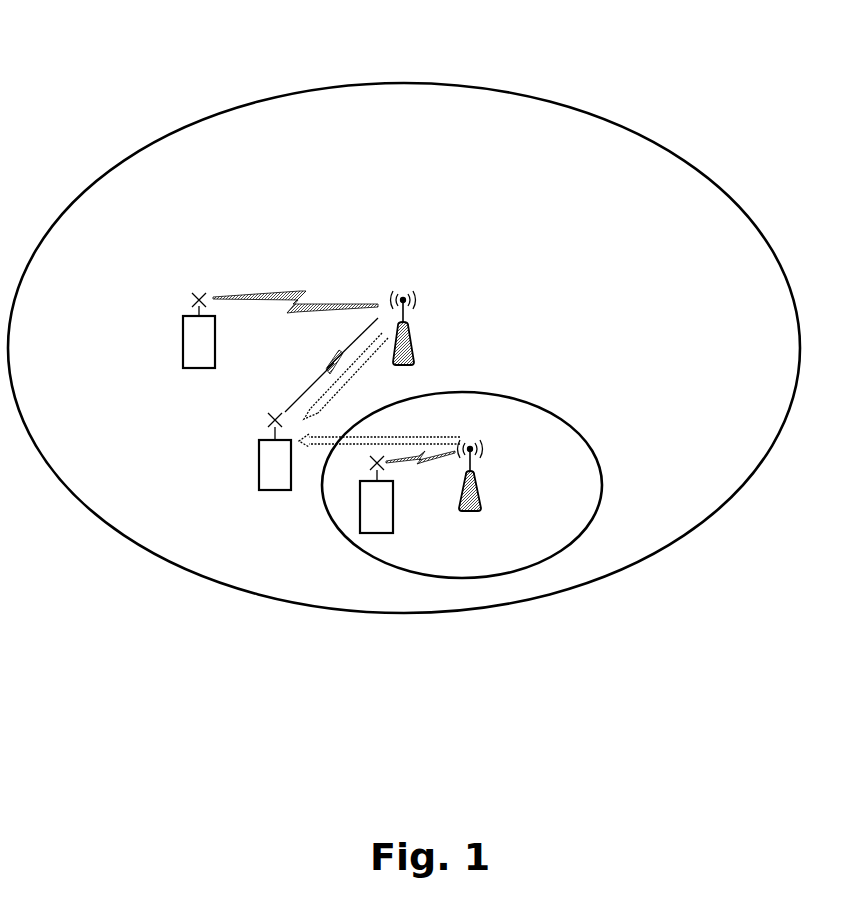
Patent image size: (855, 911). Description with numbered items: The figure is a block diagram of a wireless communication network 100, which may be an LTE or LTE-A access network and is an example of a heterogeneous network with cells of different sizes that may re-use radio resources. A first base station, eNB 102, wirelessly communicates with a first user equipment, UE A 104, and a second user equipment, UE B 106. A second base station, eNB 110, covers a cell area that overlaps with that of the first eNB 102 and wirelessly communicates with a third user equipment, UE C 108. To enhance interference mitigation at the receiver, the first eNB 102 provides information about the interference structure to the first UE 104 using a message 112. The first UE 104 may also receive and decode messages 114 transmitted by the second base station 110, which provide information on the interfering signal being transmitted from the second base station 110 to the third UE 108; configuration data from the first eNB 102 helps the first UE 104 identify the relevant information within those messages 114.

The wireless communication network 100 is at (190, 47).
The first base station (eNB) 102 is at (412, 331).
The first user equipment (UE) A 104 is at (256, 473).
The second UE B 106 is at (178, 322).
The third UE C 108 is at (396, 517).
The second base station (eNB) 110 is at (462, 485).
The message 112 is at (356, 372).
The messages 114 is at (402, 441).